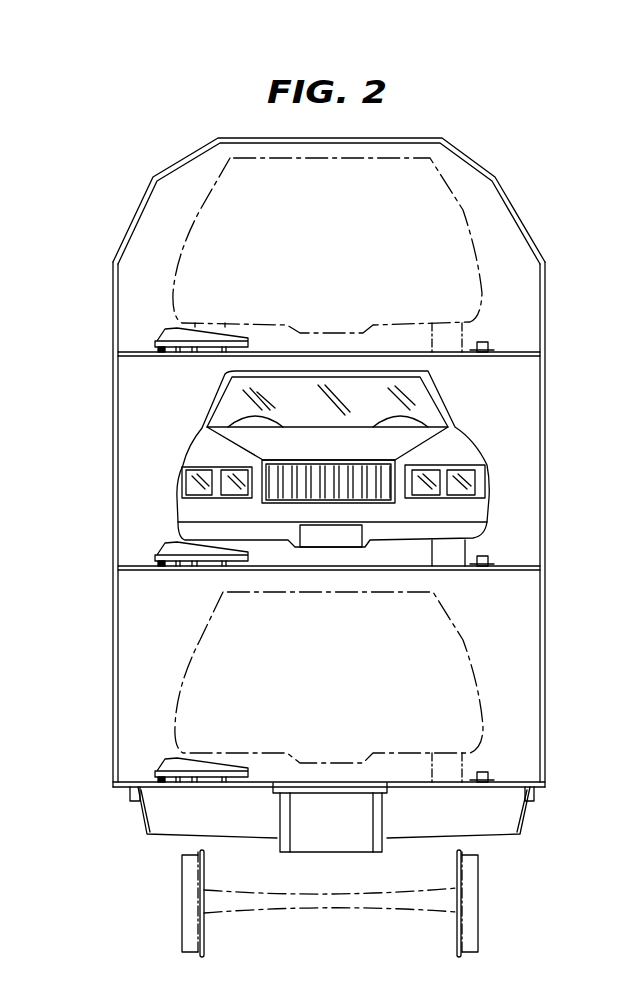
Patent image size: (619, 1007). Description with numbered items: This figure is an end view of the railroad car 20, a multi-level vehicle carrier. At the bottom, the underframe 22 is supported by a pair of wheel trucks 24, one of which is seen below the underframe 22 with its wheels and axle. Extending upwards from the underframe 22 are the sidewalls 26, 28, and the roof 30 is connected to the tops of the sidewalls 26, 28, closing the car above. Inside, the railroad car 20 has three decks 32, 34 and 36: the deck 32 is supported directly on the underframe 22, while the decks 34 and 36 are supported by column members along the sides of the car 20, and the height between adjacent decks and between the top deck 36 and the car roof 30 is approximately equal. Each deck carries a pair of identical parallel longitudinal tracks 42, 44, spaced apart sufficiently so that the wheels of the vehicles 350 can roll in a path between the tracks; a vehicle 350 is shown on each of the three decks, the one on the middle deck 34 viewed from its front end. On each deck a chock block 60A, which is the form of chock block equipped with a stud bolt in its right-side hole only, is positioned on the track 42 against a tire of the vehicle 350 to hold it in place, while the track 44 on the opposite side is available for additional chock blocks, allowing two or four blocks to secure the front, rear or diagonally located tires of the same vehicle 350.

The railroad car 20 is at (123, 202).
The underframe 22 is at (493, 822).
The wheel trucks 24 is at (172, 905).
The sidewall 26 is at (115, 480).
The sidewall 28 is at (545, 493).
The roof 30 is at (433, 137).
The deck 32 is at (505, 778).
The deck 34 is at (510, 560).
The deck 36 is at (510, 349).
The longitudinal track 42 is at (176, 350).
The longitudinal track 44 is at (482, 346).
The chock block 60A is at (173, 333).
The vehicle 350 is at (467, 227).